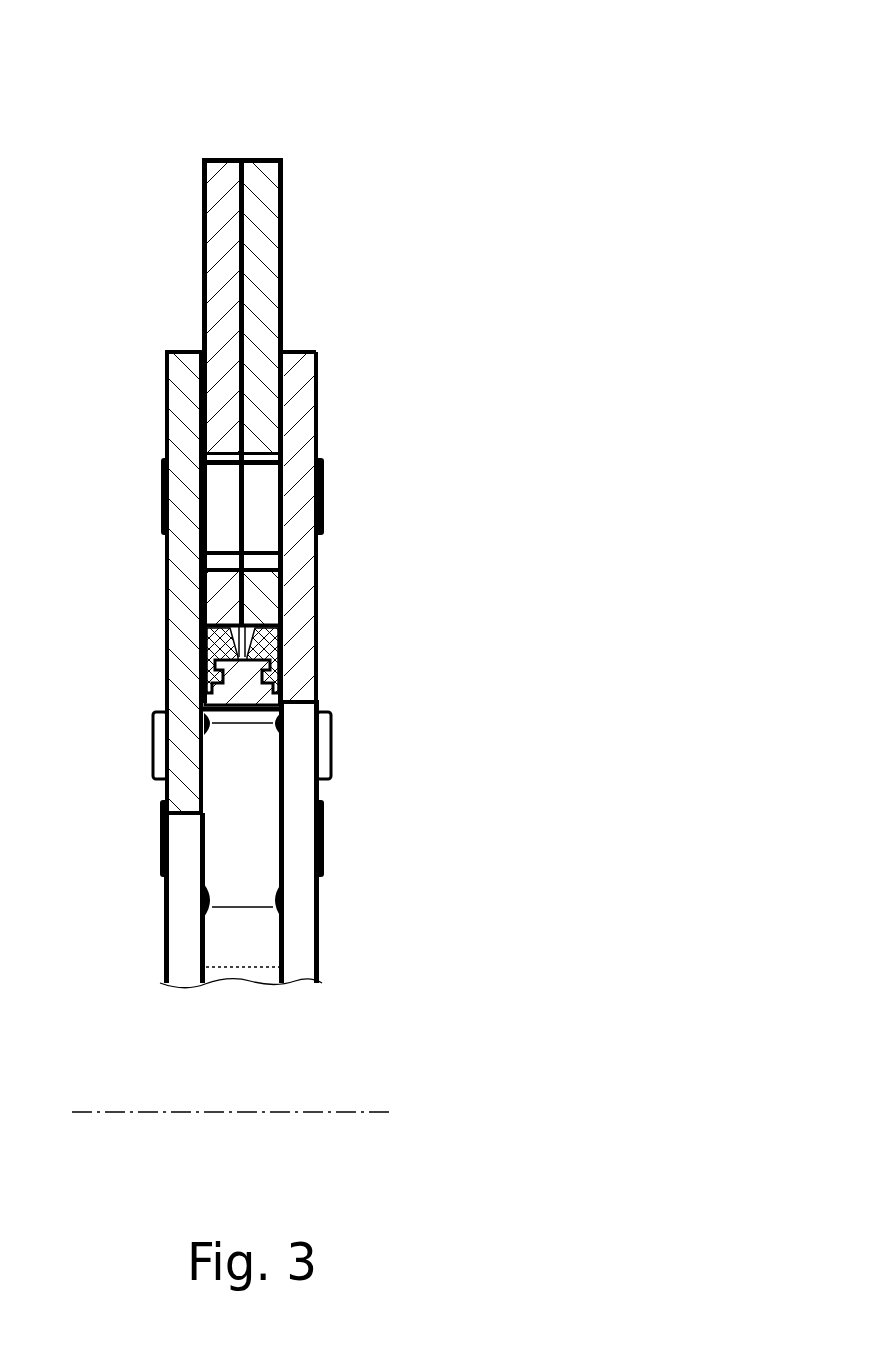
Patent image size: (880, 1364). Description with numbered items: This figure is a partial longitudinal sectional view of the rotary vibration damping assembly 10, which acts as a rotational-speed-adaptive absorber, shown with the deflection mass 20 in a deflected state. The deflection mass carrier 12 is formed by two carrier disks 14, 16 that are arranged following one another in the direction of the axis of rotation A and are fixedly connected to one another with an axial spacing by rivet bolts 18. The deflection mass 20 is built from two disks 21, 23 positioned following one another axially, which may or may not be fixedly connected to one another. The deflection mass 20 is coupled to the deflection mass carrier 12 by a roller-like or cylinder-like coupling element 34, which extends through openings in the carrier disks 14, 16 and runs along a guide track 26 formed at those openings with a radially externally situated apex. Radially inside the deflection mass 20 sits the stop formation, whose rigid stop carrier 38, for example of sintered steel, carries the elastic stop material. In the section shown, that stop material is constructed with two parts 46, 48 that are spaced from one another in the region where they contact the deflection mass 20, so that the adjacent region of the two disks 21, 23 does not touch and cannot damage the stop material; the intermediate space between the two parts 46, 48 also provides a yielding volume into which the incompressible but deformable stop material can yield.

The rotary vibration damping assembly 10 is at (311, 564).
The deflection mass carrier 12 is at (318, 410).
The carrier disk 14 is at (166, 920).
The carrier disk 16 is at (318, 920).
The rivet bolts 18 is at (330, 748).
The deflection mass 20 is at (276, 360).
The disk 21 is at (202, 232).
The disk 23 is at (283, 253).
The guide track 26 is at (226, 457).
The coupling element 34 is at (238, 508).
The stop carrier 38 is at (238, 707).
The part of stop material 46 is at (218, 648).
The part of stop material 48 is at (268, 648).
The axis of rotation A is at (375, 1112).